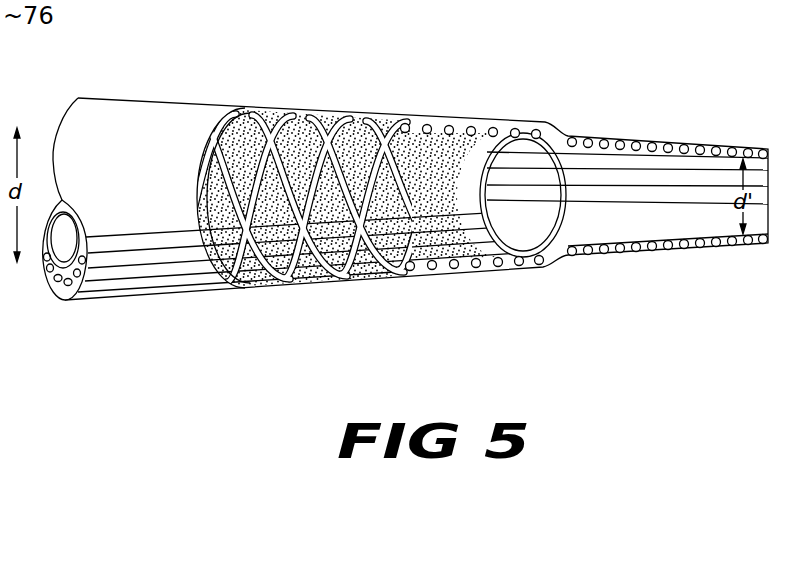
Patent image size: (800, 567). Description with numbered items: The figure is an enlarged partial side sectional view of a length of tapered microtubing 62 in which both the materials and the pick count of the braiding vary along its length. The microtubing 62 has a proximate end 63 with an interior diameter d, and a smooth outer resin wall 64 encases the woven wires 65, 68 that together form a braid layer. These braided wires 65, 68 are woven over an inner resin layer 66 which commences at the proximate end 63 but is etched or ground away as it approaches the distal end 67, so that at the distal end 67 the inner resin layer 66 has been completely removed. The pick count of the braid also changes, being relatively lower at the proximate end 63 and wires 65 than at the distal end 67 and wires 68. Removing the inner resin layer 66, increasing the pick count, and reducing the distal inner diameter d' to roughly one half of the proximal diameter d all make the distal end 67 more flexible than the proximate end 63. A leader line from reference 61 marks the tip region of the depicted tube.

The distal end of catheter body 61 is at (37, 288).
The microtubing 62 is at (266, 80).
The proximate end 63 is at (74, 126).
The smooth outer resin wall 64 is at (163, 275).
The woven wires 65 is at (340, 253).
The inner resin layer 66 is at (444, 232).
The distal end 67 is at (753, 148).
The woven wires 68 is at (693, 247).